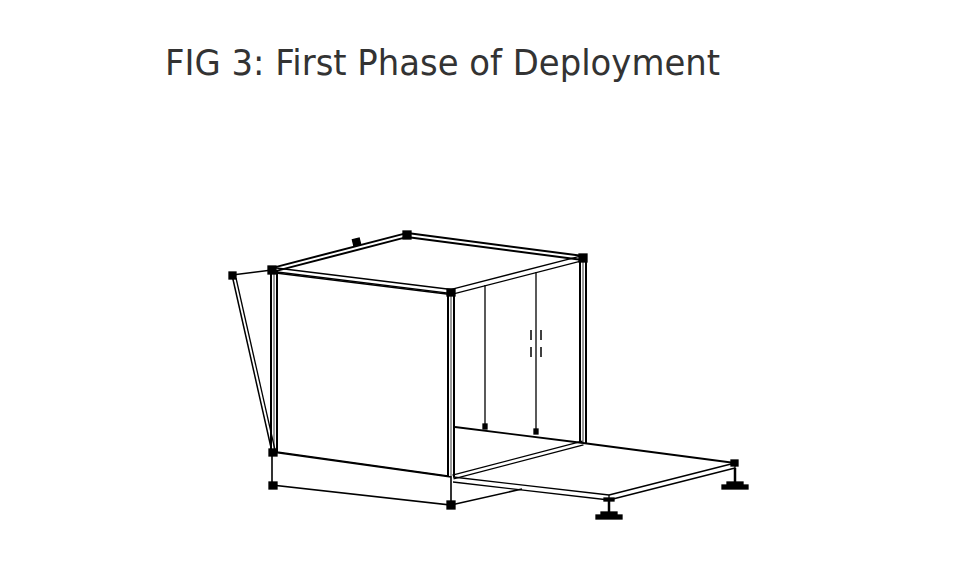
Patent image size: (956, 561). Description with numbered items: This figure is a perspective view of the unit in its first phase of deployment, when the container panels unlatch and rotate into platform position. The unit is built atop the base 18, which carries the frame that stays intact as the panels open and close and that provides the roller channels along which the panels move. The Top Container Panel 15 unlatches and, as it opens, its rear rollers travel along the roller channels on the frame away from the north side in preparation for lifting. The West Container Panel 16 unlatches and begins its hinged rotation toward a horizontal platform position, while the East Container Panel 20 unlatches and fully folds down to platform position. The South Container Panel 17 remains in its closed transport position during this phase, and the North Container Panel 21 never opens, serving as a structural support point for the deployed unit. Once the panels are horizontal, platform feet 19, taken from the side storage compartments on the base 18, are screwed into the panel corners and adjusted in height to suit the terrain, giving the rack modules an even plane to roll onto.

The Top Container Panel 15 is at (417, 287).
The West Container Panel 16 is at (239, 311).
The South Container Panel 17 is at (338, 407).
The base 18 is at (317, 477).
The platform feet 19 is at (741, 481).
The East Container Panel 20 is at (634, 448).
The North Container Panel 21 is at (540, 331).